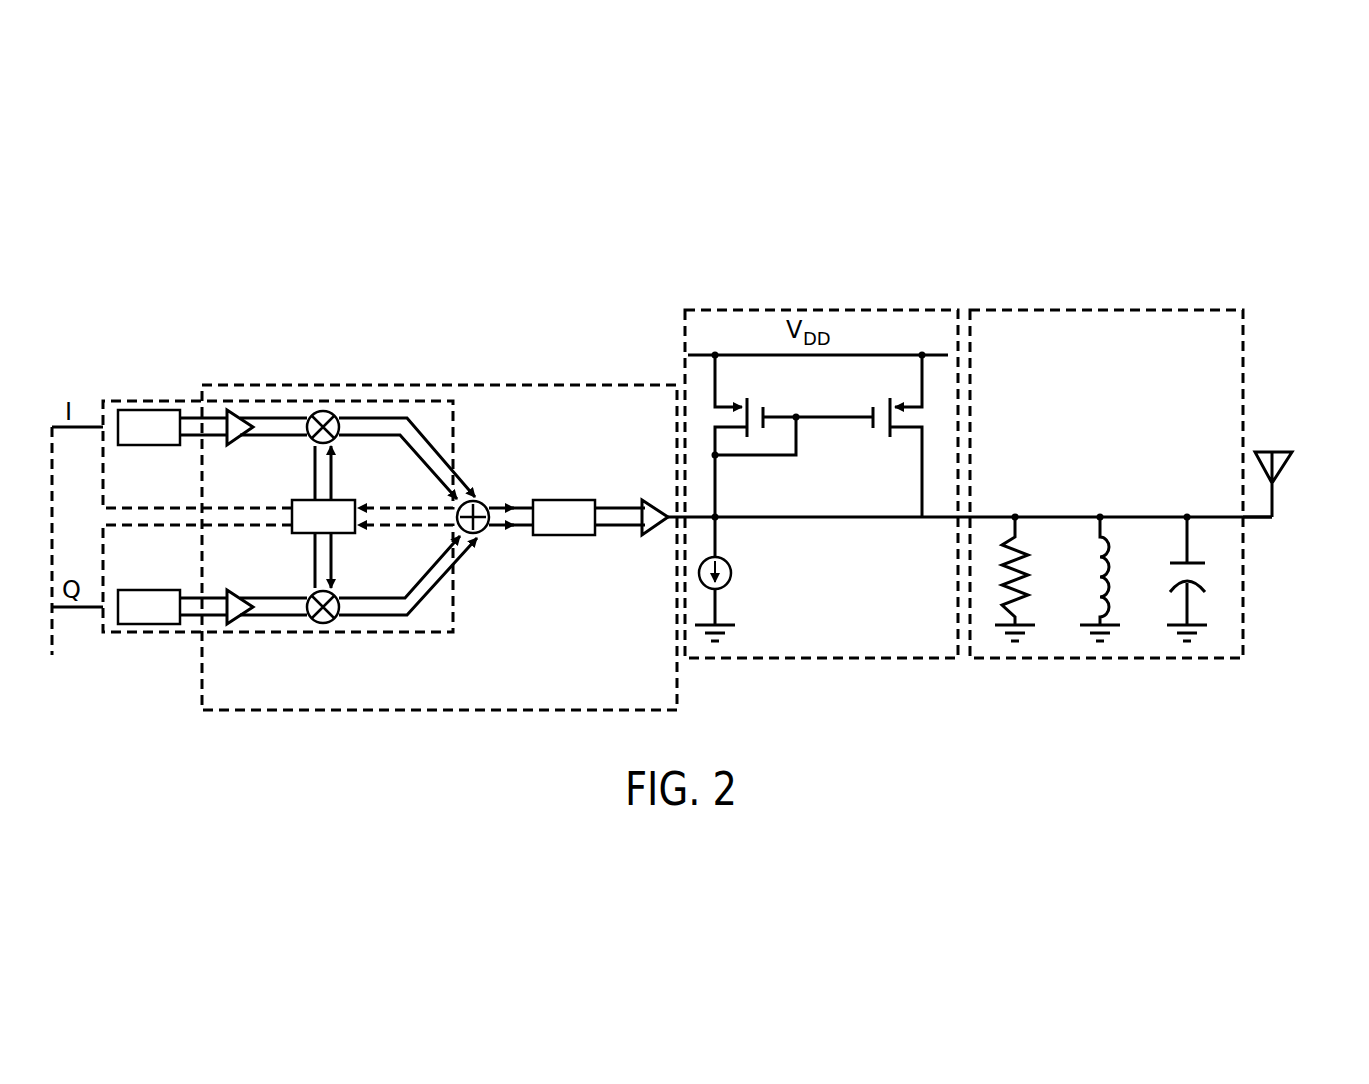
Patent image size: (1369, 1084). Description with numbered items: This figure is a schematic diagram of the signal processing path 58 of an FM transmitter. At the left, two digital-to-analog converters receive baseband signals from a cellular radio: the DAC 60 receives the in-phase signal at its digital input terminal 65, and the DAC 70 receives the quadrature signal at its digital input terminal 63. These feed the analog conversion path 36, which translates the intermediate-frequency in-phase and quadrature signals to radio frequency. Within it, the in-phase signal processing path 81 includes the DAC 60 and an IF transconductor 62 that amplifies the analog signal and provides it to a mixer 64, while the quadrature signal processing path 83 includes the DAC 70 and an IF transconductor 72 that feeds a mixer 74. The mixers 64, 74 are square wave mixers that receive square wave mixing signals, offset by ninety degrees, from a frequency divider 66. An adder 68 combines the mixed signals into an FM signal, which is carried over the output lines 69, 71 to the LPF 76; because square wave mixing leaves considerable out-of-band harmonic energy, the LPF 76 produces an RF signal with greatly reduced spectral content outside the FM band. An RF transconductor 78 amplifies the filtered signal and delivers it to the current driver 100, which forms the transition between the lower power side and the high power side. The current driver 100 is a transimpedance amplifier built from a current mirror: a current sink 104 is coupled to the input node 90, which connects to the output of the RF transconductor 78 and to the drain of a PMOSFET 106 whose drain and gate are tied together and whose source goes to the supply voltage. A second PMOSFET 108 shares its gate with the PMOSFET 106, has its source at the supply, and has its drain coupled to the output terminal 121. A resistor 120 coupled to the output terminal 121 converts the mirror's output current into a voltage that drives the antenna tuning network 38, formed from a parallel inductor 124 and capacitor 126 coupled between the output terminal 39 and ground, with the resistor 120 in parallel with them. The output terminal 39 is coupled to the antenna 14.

The signal processing path 58 is at (1290, 228).
The digital input terminal 65 is at (80, 427).
The digital input terminal 63 is at (78, 608).
The DAC 60 is at (150, 410).
The DAC 70 is at (153, 624).
The IF transconductor 62 is at (232, 412).
The IF transconductor 72 is at (240, 624).
The mixer 64 is at (322, 410).
The mixer 74 is at (323, 623).
The frequency divider 66 is at (293, 537).
The in-phase signal processing path 81 is at (456, 415).
The quadrature signal processing path 83 is at (458, 578).
The adder 68 is at (484, 503).
The summed signal line 69 is at (523, 505).
The summed signal line 71 is at (522, 532).
The LPF 76 is at (567, 500).
The RF transconductor 78 is at (652, 530).
The analog conversion path 36 is at (438, 711).
The input node 90 is at (700, 514).
The current driver 100 is at (822, 658).
The current sink 104 is at (728, 584).
The PMOSFET 106 is at (748, 417).
The PMOSFET 108 is at (903, 428).
The output terminal 121 is at (937, 520).
The antenna tuning network 38 is at (1107, 658).
The resistor 120 is at (1022, 537).
The inductor 124 is at (1095, 537).
The capacitor 126 is at (1205, 565).
The output terminal 39 is at (1257, 519).
The antenna 14 is at (1278, 466).